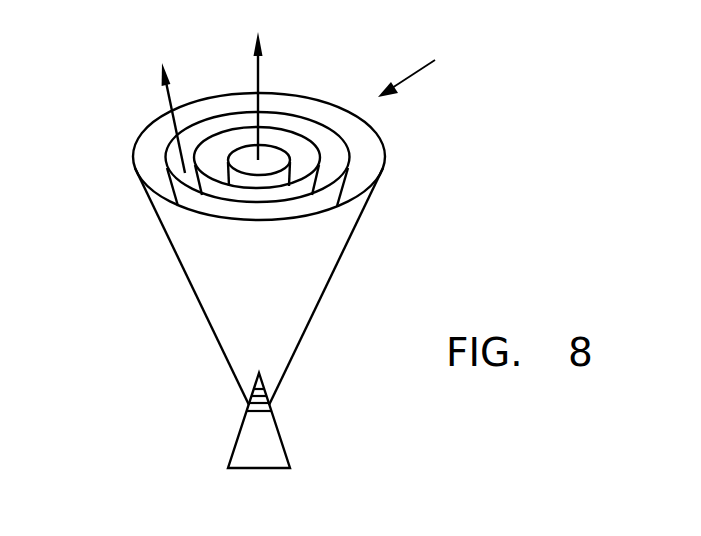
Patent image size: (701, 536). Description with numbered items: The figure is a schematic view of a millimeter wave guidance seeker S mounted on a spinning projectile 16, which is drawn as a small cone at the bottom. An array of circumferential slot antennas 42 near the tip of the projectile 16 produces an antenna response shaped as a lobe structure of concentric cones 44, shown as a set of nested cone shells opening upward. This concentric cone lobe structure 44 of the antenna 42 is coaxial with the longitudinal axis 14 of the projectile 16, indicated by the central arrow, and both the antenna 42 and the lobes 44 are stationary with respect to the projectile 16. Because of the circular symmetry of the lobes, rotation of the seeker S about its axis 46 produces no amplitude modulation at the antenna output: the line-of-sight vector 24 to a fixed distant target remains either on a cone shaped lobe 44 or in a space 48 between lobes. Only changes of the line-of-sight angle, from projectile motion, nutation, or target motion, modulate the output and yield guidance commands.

The longitudinal axis 14 is at (262, 72).
The axis 46 is at (262, 87).
The line-of-sight vector 24 is at (167, 103).
The space between lobes 48 is at (358, 148).
The concentric cone lobes 44 is at (382, 162).
The projectile 16 is at (280, 433).
The circumferential slot antennas 42 is at (245, 404).
The millimeter wave guidance seeker S is at (419, 71).